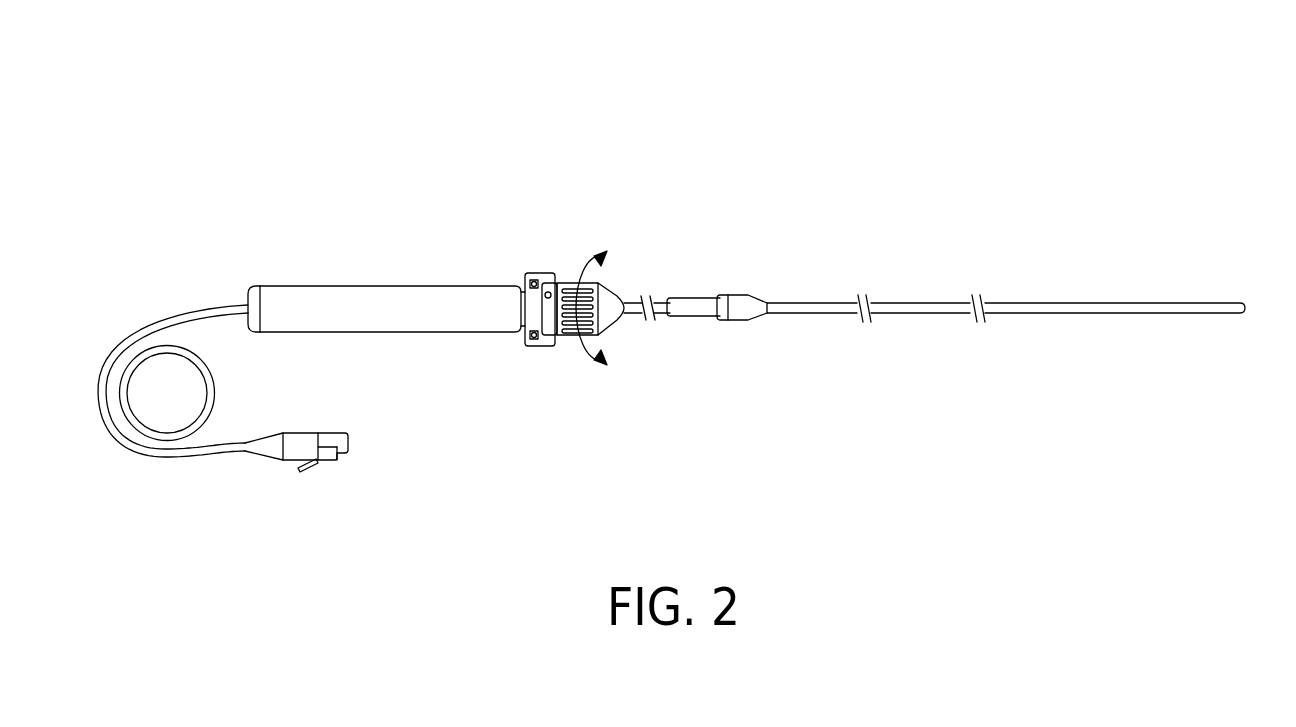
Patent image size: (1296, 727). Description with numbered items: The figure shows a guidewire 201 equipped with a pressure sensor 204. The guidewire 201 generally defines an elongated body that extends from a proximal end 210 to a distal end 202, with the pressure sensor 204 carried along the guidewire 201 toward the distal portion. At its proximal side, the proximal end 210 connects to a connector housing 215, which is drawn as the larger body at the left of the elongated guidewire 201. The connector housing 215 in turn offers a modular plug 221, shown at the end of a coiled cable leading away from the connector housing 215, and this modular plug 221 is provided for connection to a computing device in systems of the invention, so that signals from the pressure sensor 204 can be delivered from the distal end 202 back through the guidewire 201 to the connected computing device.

The guidewire 201 is at (213, 139).
The distal end 202 is at (1244, 290).
The pressure sensor 204 is at (957, 297).
The proximal end 210 is at (740, 288).
The connector housing 215 is at (370, 285).
The modular plug 221 is at (283, 462).